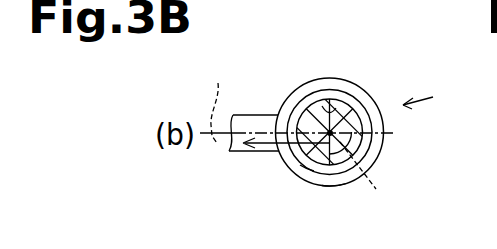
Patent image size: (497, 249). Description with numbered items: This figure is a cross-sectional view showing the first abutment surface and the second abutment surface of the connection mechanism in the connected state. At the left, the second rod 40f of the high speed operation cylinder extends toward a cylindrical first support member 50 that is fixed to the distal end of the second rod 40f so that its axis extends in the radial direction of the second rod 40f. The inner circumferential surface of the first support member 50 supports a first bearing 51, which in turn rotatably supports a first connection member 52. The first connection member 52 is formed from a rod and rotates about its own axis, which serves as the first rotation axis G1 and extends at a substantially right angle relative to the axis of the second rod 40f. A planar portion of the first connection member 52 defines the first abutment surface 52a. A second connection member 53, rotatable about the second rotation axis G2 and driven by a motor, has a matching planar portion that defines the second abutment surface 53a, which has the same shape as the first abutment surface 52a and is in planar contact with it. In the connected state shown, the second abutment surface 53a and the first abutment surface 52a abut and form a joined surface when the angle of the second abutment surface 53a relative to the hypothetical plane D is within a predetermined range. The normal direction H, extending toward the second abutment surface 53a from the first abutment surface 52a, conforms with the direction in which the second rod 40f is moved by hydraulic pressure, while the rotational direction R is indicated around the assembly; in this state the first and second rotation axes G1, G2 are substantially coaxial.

The second rod 40f is at (231, 152).
The first support member 50 is at (383, 139).
The first bearing 51 is at (380, 155).
The first connection member 52 is at (361, 100).
The first abutment surface 52a is at (337, 184).
The second connection member 53 is at (308, 182).
The second abutment surface 53a is at (322, 106).
The hypothetical plane D is at (218, 97).
The normal direction H is at (257, 151).
The rotation direction R is at (429, 92).
The first rotation axis G1 is at (373, 175).
The second rotation axis G2 is at (340, 9).